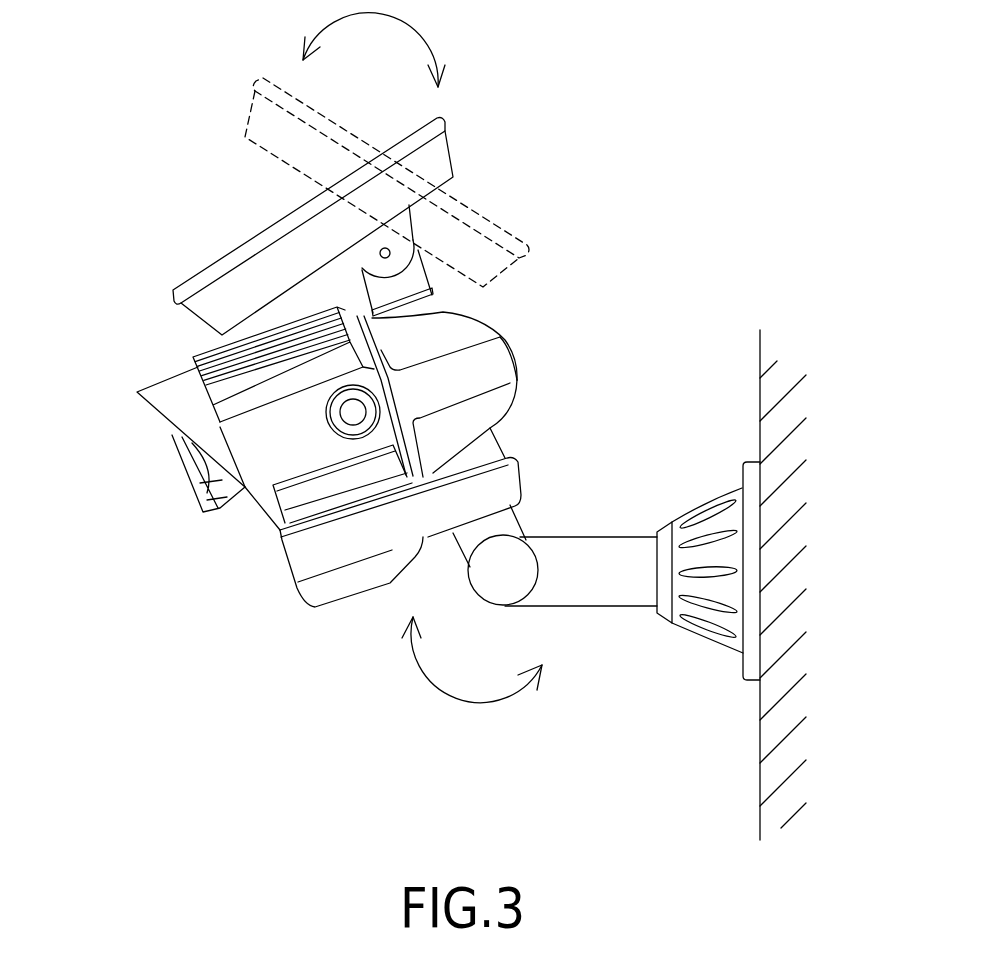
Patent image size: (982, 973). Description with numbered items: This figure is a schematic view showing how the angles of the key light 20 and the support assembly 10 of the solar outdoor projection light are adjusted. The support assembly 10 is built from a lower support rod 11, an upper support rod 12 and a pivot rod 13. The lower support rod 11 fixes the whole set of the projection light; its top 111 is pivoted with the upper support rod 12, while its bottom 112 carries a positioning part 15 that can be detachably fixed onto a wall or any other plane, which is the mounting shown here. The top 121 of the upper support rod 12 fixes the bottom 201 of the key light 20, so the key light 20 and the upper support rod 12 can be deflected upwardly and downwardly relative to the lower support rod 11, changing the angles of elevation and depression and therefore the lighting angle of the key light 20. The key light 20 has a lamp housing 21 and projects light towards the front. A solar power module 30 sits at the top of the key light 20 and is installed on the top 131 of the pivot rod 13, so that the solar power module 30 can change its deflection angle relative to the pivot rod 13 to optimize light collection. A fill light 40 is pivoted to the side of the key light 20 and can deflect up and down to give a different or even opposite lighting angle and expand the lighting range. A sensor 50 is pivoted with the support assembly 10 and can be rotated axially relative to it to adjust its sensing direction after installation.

The support assembly 10 is at (614, 564).
The lower support rod 11 is at (583, 608).
The top of the lower support rod 111 is at (515, 607).
The bottom of the lower support rod 112 is at (650, 610).
The upper support rod 12 is at (523, 522).
The top of the upper support rod 121 is at (497, 445).
The pivot rod 13 is at (437, 281).
The top of the pivot rod 131 is at (400, 222).
The positioning part 15 is at (716, 504).
The key light 20 is at (138, 428).
The bottom of the key light 201 is at (513, 397).
The lamp housing 21 is at (167, 378).
The solar power module 30 is at (210, 247).
The fill light 40 is at (258, 487).
The sensor 50 is at (337, 605).